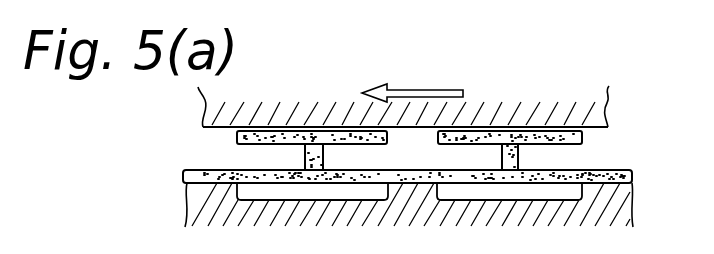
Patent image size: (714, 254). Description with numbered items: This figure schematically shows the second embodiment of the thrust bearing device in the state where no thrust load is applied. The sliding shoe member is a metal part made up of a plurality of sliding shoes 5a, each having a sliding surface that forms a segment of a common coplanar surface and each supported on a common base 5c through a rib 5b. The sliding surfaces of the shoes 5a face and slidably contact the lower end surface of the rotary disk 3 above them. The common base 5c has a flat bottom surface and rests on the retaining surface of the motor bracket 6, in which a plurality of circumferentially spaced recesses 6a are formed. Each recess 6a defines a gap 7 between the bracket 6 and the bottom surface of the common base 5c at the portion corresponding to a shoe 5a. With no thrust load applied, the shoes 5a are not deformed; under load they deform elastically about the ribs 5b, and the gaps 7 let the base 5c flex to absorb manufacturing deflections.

The rotary disk 3 is at (578, 101).
The sliding shoe 5a is at (583, 138).
The rib 5b is at (318, 160).
The common base 5c is at (602, 188).
The motor bracket 6 is at (420, 248).
The recess 6a is at (531, 190).
The gap 7 is at (302, 191).